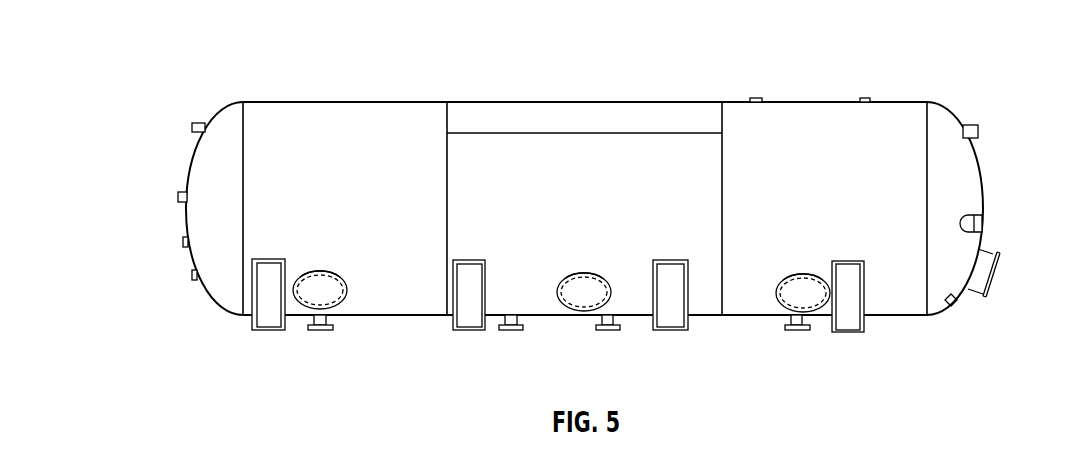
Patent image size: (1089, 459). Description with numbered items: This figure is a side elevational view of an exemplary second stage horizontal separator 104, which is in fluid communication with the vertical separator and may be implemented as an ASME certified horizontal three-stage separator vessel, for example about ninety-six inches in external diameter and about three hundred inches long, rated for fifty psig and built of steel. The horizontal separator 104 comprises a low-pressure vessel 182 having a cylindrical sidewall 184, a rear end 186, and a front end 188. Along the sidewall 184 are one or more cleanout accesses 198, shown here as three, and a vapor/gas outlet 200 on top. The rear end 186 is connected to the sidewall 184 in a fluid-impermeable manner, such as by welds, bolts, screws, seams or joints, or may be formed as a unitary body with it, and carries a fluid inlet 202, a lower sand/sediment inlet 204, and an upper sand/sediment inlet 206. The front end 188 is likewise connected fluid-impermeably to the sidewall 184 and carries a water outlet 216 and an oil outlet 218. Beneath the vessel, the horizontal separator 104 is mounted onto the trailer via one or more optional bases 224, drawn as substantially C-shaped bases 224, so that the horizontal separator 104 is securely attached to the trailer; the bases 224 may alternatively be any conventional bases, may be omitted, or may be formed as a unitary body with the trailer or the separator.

The horizontal separator 104 is at (290, 93).
The low-pressure vessel 182 is at (570, 94).
The cylindrical sidewall 184 is at (793, 101).
The rear end 186 is at (184, 223).
The front end 188 is at (983, 176).
The cleanout access 198 is at (306, 308).
The vapor/gas outlet 200 is at (865, 98).
The fluid inlet 202 is at (192, 127).
The lower sand/sediment inlet 204 is at (192, 275).
The upper sand/sediment inlet 206 is at (178, 197).
The water outlet 216 is at (980, 131).
The oil outlet 218 is at (982, 223).
The bases 224 is at (672, 332).